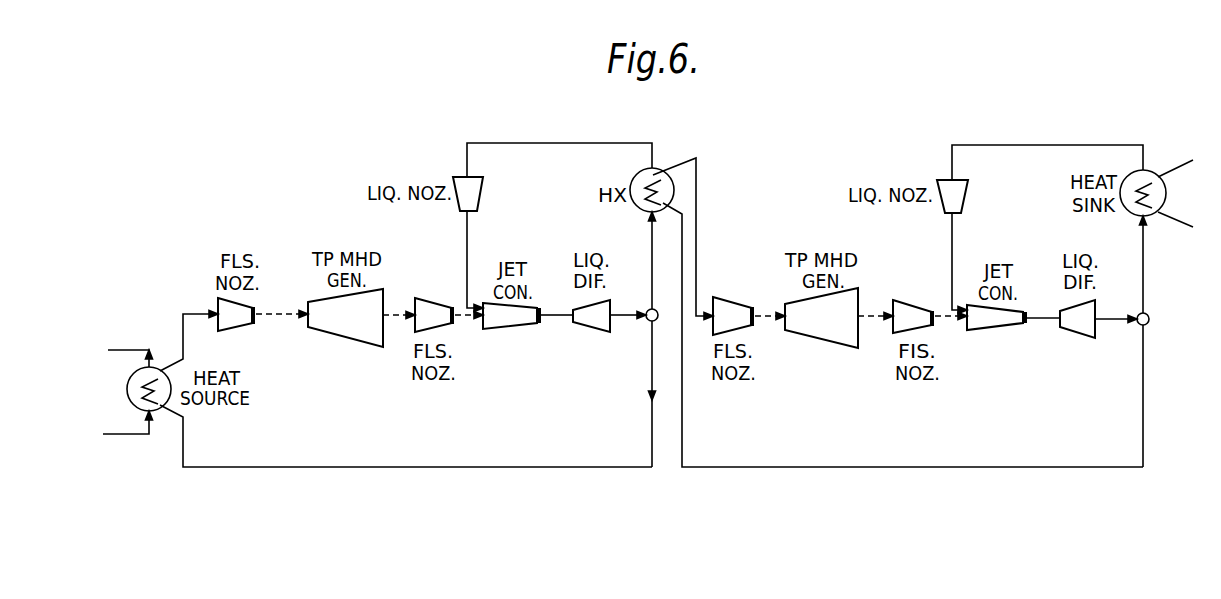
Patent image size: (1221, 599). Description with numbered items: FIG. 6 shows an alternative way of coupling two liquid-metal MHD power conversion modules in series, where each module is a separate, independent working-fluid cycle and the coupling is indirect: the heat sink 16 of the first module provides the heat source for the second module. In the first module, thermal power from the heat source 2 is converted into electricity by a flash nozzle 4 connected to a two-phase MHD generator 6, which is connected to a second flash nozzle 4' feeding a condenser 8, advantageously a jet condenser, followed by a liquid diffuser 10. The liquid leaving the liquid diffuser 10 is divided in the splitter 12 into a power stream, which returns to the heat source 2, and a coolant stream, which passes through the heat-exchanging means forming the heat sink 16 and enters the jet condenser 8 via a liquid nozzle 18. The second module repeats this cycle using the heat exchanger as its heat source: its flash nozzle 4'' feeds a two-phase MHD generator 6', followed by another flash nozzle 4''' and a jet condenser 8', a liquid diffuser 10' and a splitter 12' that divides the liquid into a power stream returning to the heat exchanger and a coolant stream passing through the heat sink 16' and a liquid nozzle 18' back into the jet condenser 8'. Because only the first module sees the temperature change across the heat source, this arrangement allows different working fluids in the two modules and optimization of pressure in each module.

The heat source 2 is at (135, 385).
The flash nozzle 4 is at (246, 331).
The two-phase MHD generator 6 is at (345, 331).
The second flash nozzle 4' is at (433, 297).
The condenser 8 is at (512, 338).
The liquid diffuser 10 is at (586, 336).
The splitter 12 is at (635, 341).
The liquid nozzle 18 is at (492, 194).
The heat sink 16 is at (666, 168).
The flash nozzle 4'' is at (733, 299).
The two-phase MHD generator 6' is at (821, 332).
The flash nozzle 4''' is at (915, 298).
The liquid nozzle 18' is at (978, 196).
The condenser 8' is at (997, 340).
The liquid diffuser 10' is at (1081, 337).
The splitter 12' is at (1171, 320).
The heat sink 16' is at (1170, 193).